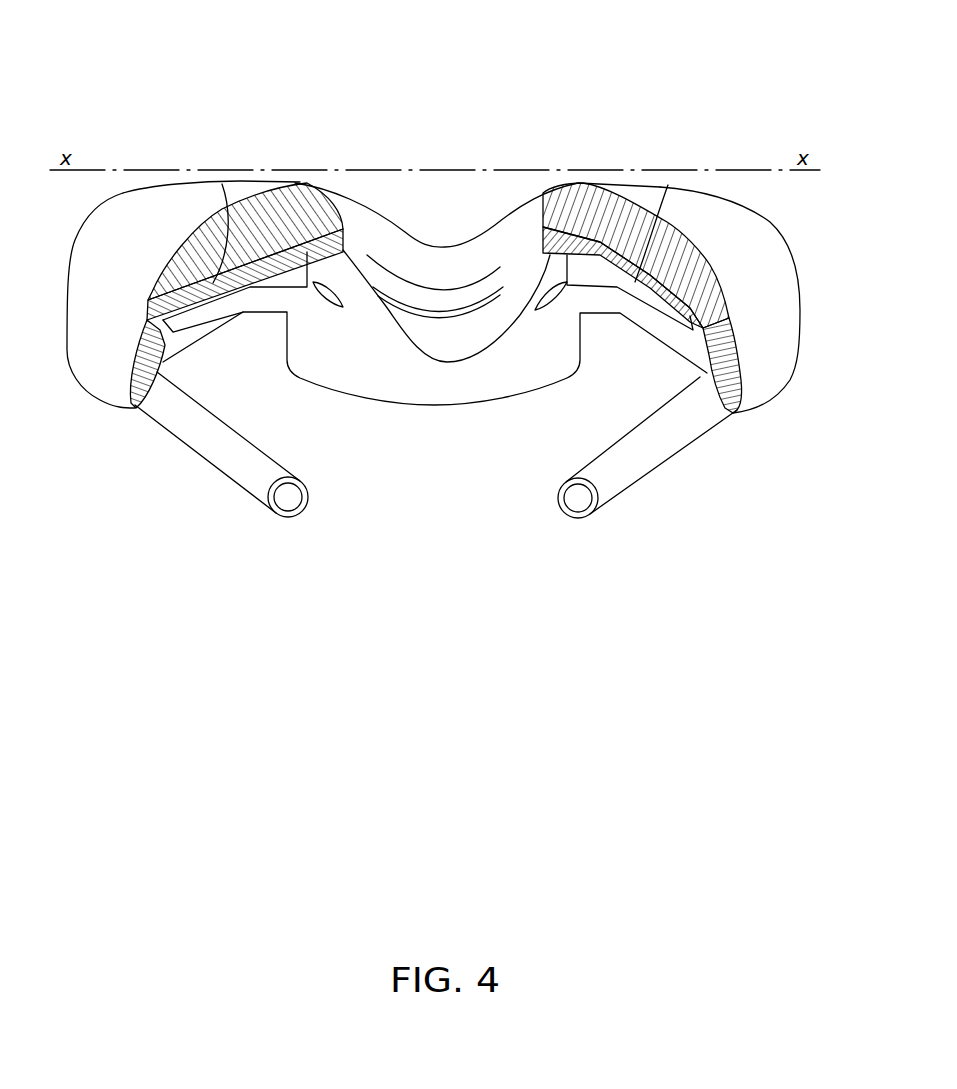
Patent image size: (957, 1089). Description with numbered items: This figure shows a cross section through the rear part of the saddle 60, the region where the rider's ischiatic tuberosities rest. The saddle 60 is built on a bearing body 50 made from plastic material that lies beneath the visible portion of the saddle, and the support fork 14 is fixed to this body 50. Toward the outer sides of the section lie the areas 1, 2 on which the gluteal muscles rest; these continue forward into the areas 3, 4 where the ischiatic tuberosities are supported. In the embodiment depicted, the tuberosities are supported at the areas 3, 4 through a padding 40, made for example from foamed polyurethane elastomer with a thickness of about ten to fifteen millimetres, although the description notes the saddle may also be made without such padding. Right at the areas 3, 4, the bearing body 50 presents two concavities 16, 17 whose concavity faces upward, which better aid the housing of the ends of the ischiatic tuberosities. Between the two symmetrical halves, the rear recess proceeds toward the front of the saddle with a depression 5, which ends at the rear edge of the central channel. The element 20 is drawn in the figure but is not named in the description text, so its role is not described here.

The area 1 is at (177, 197).
The area 2 is at (718, 218).
The area 3 is at (157, 265).
The area 4 is at (711, 264).
The depression 5 is at (447, 270).
The support fork 14 is at (243, 483).
The concavity 16 is at (670, 183).
The concavity 17 is at (221, 183).
The support base 20 is at (397, 403).
The padding 40 is at (290, 170).
The bearing body 50 is at (281, 277).
The saddle 60 is at (110, 180).